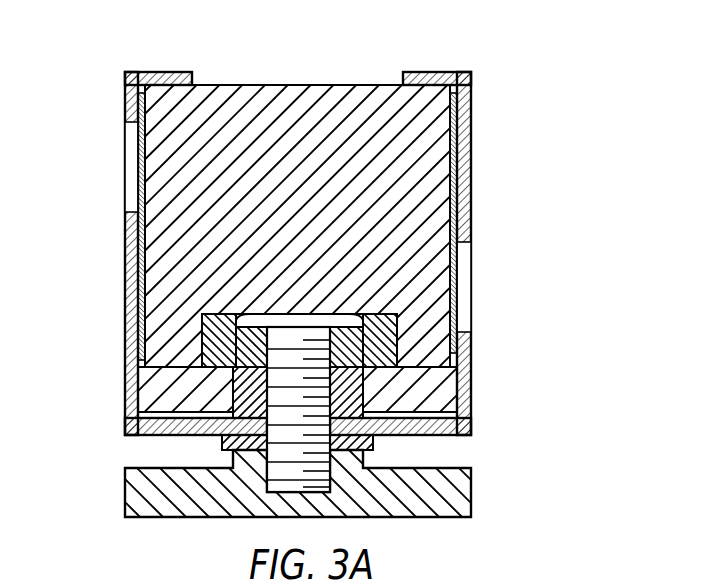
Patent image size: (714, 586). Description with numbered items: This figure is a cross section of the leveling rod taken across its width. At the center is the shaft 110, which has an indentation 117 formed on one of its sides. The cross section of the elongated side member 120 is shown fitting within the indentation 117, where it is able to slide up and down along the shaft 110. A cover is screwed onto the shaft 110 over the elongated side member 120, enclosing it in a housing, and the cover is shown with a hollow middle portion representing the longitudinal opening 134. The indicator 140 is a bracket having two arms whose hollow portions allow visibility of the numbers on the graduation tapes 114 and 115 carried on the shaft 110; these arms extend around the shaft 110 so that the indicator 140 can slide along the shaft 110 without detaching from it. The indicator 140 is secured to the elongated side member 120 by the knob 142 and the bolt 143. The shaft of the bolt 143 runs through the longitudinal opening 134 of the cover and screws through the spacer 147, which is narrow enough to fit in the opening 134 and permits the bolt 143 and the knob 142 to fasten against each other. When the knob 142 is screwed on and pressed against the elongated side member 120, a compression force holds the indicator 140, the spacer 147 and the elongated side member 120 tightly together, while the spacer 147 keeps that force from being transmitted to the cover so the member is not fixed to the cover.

The shaft 110 is at (296, 110).
The graduation tape 114 is at (143, 158).
The graduation tape 115 is at (452, 138).
The indentation 117 is at (396, 314).
The elongated side member 120 is at (230, 340).
The longitudinal opening 134 is at (277, 402).
The indicator 140 is at (471, 107).
The knob 142 is at (368, 503).
The bolt 143 is at (277, 313).
The spacer 147 is at (348, 395).